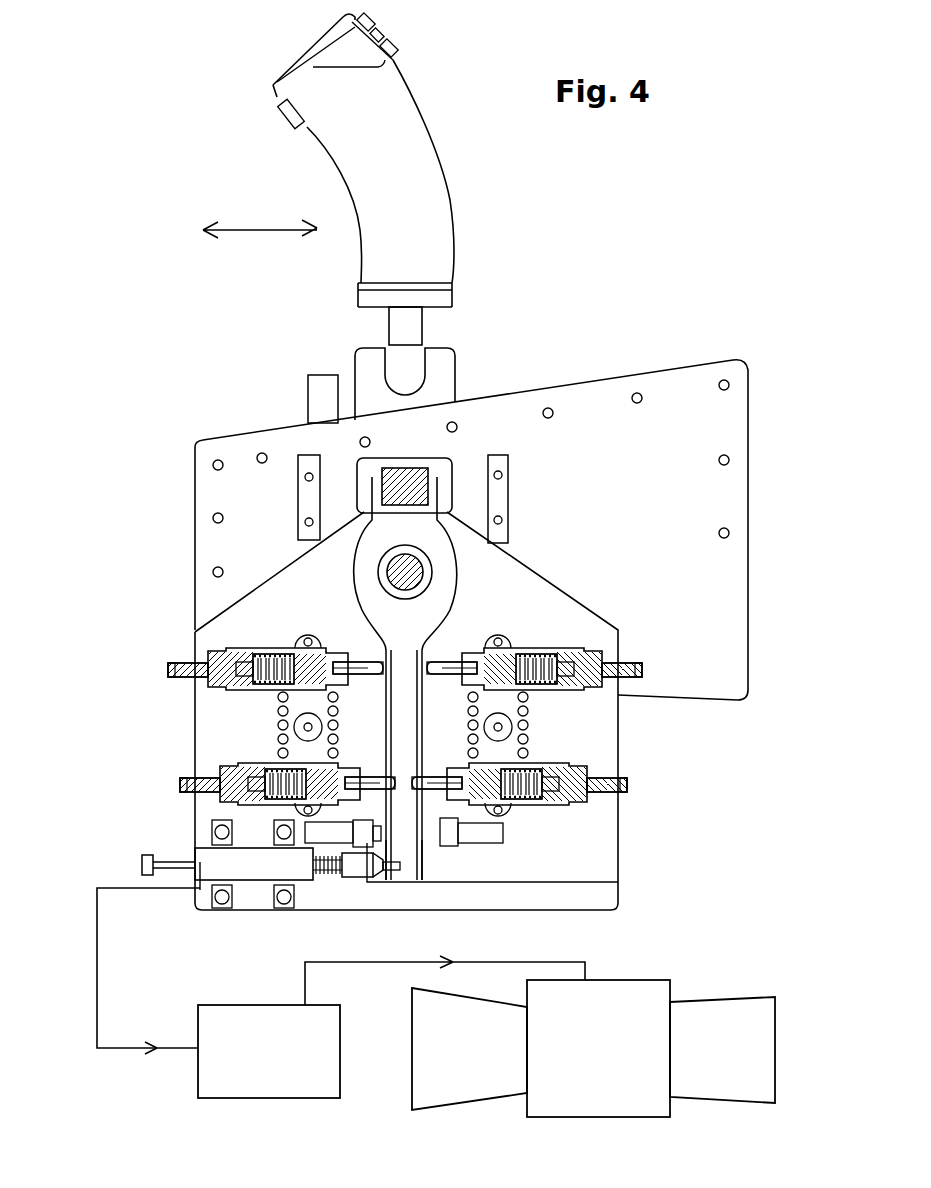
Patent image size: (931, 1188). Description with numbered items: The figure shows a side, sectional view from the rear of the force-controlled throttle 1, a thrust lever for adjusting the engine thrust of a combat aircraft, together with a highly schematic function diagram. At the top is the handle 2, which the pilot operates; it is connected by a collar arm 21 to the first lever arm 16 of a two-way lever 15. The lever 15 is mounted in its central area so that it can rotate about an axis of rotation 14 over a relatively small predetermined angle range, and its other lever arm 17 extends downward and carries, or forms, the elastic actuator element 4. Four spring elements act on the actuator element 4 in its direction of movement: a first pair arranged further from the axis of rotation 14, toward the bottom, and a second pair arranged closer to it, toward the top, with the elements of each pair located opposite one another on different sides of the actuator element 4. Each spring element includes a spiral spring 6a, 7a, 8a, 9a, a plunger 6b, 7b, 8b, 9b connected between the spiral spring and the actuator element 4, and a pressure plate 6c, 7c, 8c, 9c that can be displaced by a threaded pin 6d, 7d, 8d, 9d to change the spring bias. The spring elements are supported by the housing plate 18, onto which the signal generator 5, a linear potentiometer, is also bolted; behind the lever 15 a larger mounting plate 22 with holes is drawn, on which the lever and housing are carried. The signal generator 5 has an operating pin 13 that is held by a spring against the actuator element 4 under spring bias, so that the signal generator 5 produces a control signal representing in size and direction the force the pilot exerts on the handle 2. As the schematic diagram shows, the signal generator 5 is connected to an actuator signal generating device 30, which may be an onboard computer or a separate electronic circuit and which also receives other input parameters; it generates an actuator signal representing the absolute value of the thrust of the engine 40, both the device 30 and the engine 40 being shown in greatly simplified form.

The force-controlled throttle 1 is at (630, 292).
The handle 2 is at (407, 208).
The actuator element 4 is at (403, 827).
The signal generator 5 is at (295, 867).
The spiral spring 6a is at (265, 787).
The plunger 6b is at (365, 776).
The pressure plate 6c is at (248, 782).
The threaded pin 6d is at (178, 785).
The spiral spring 7a is at (533, 787).
The plunger 7b is at (440, 782).
The pressure plate 7c is at (550, 782).
The threaded pin 7d is at (635, 783).
The spiral spring 8a is at (268, 673).
The plunger 8b is at (365, 673).
The pressure plate 8c is at (237, 672).
The threaded pin 8d is at (167, 671).
The spiral spring 9a is at (543, 670).
The plunger 9b is at (443, 670).
The pressure plate 9c is at (563, 667).
The threaded pin 9d is at (645, 667).
The operating pin 13 is at (358, 862).
The axis of rotation 14 is at (400, 568).
The two-way lever 15 is at (350, 560).
The lever arm 16 is at (433, 395).
The lever arm 17 is at (413, 617).
The housing plate 18 is at (578, 880).
The collar arm 21 is at (403, 475).
The mounting plate 22 is at (658, 469).
The actuator signal generating device 30 is at (287, 1066).
The engine 40 is at (620, 1068).